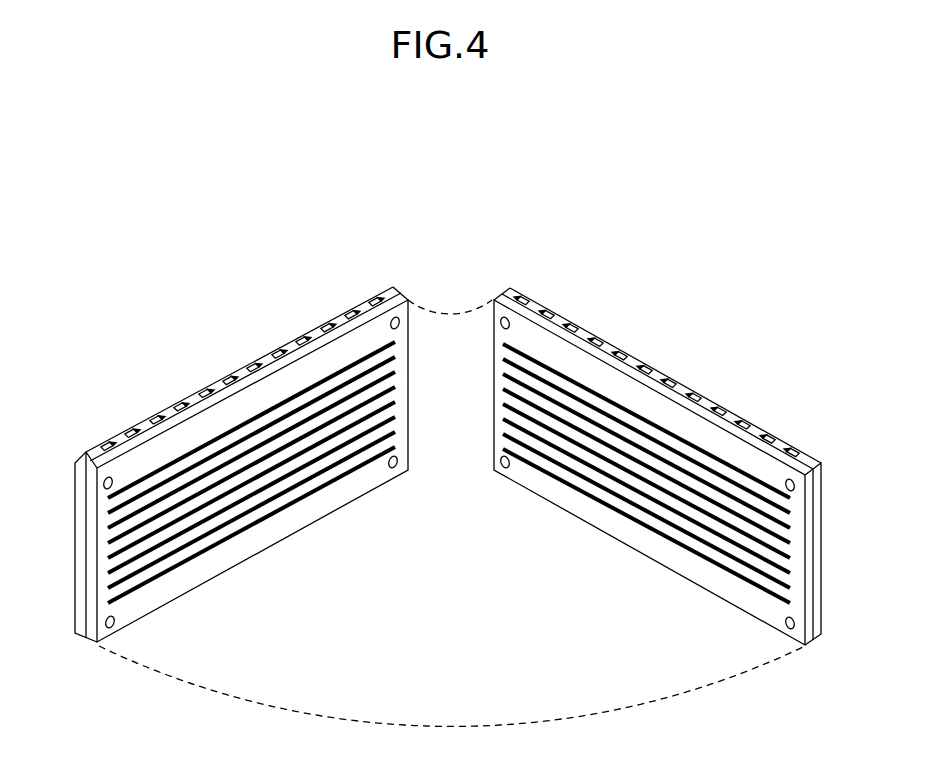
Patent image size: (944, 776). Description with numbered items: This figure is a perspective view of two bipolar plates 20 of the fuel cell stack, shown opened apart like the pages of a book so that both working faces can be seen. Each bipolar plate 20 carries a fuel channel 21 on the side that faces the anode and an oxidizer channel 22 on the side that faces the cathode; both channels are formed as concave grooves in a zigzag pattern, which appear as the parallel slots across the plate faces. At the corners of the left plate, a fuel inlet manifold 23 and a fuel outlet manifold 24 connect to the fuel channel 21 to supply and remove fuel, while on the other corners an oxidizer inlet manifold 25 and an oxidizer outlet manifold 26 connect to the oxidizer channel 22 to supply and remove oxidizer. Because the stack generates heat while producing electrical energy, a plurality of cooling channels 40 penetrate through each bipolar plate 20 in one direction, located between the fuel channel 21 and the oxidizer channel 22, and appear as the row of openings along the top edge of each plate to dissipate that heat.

The bipolar plate 20 is at (441, 482).
The fuel channel 21 is at (267, 530).
The oxidizer channel 22 is at (630, 520).
The fuel inlet manifold 23 is at (104, 478).
The fuel outlet manifold 24 is at (397, 467).
The oxidizer inlet manifold 25 is at (508, 317).
The oxidizer outlet manifold 26 is at (790, 629).
The cooling channels 40 is at (350, 319).